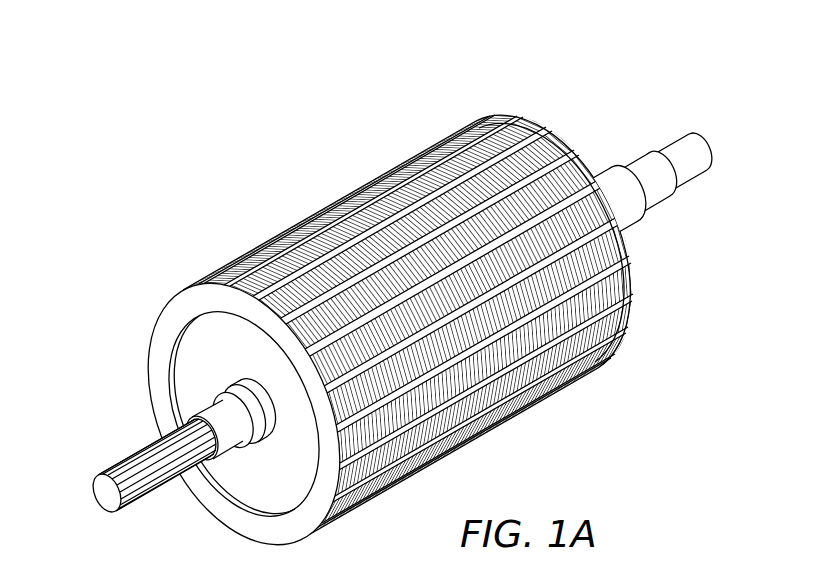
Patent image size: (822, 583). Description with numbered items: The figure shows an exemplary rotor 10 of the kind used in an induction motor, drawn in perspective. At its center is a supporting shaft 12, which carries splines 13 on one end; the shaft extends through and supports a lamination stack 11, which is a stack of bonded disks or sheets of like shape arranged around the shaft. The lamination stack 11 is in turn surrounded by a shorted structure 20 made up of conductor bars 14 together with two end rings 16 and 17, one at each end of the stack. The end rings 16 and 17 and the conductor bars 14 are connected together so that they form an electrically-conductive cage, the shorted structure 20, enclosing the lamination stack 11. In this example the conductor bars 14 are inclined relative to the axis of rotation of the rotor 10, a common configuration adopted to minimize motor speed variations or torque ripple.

The rotor 10 is at (428, 296).
The lamination stack 11 is at (430, 305).
The supporting shaft 12 is at (663, 140).
The splines 13 is at (118, 462).
The conductor bars 14 is at (598, 307).
The end ring 16 is at (183, 305).
The end ring 17 is at (637, 300).
The shorted structure 20 is at (428, 320).